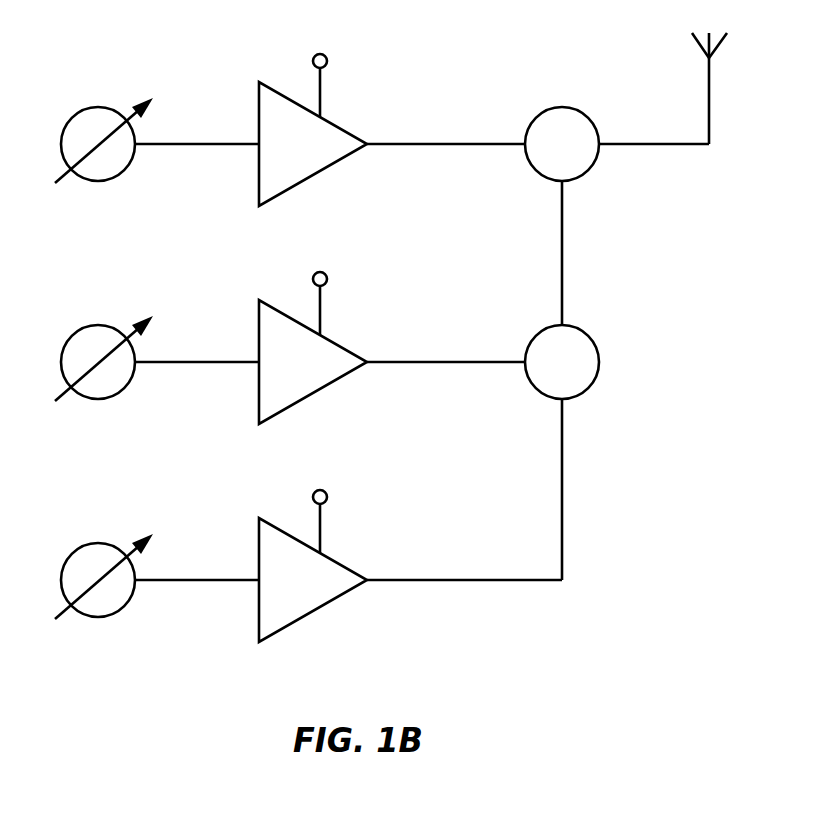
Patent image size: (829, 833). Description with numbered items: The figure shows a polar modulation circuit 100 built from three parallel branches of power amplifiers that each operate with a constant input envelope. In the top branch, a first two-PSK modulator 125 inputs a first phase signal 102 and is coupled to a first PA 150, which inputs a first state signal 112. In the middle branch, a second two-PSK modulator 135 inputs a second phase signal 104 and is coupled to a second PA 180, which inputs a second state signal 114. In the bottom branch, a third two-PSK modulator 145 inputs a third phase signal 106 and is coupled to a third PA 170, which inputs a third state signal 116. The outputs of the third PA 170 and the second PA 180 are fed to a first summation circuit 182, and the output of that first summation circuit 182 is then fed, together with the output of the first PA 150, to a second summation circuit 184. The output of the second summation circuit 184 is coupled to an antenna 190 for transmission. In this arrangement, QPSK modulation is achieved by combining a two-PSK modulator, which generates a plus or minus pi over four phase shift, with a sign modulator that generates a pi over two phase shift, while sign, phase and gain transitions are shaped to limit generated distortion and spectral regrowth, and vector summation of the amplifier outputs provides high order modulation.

The polar modulation circuit 100 is at (714, 274).
The first phase signal 102 is at (119, 208).
The second phase signal 104 is at (119, 426).
The third phase signal 106 is at (119, 644).
The first state signal 112 is at (340, 40).
The second state signal 114 is at (340, 258).
The third state signal 116 is at (340, 476).
The first 2-PSK modulator 125 is at (98, 106).
The second 2-PSK modulator 135 is at (98, 324).
The third 2-PSK modulator 145 is at (98, 542).
The first PA 150 is at (308, 180).
The power amplifier 180 is at (308, 398).
The third PA 170 is at (308, 616).
The first summation circuit 182 is at (595, 340).
The second summation circuit 184 is at (595, 122).
The antenna 190 is at (718, 43).